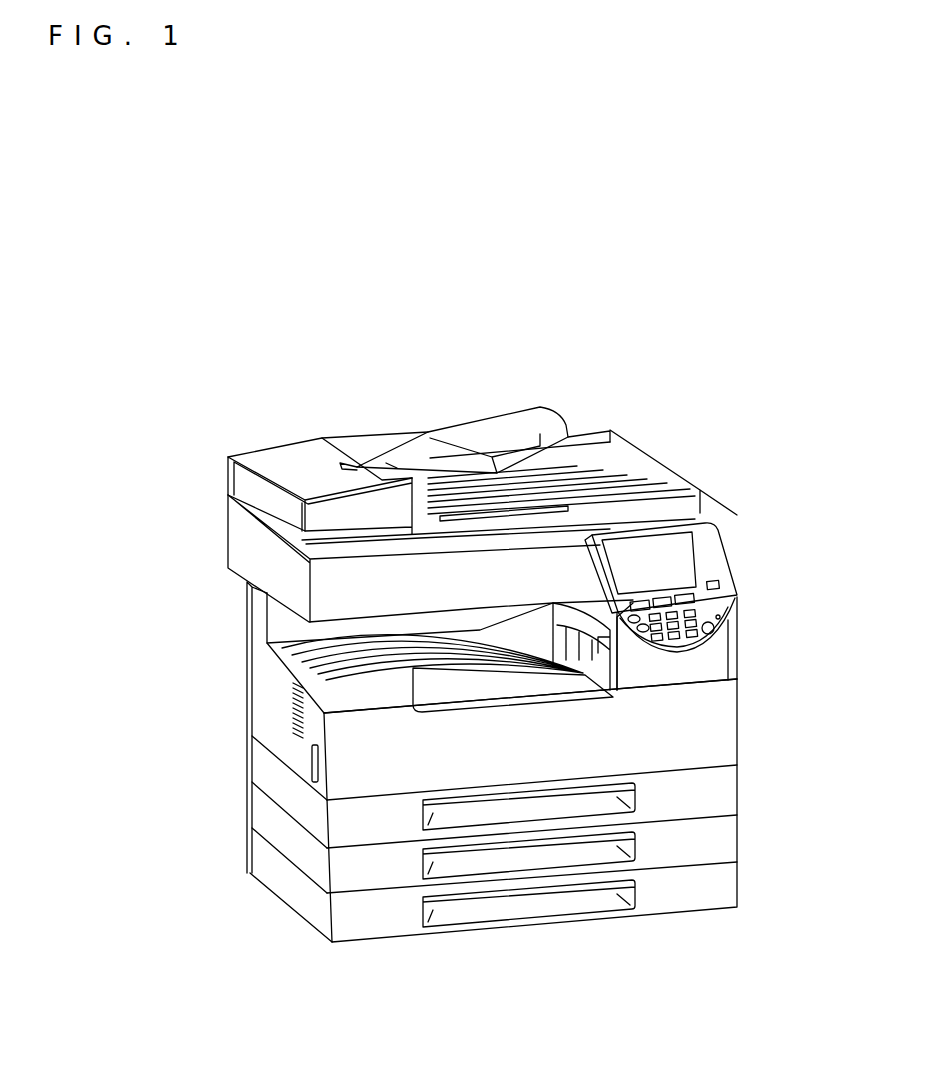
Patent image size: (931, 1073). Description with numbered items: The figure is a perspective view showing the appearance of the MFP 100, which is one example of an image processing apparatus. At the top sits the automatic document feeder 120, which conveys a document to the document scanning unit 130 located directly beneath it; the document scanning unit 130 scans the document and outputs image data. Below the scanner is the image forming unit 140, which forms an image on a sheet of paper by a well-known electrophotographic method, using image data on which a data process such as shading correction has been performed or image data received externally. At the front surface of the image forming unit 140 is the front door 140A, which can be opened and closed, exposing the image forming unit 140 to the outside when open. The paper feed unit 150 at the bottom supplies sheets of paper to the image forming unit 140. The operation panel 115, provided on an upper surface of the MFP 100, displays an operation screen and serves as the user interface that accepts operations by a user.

The MFP 100 is at (240, 328).
The operation panel 115 is at (667, 553).
The automatic document feeder 120 is at (283, 445).
The document scanning unit 130 is at (233, 543).
The image forming unit 140 is at (252, 678).
The front door 140A is at (710, 731).
The paper feed unit 150 is at (238, 730).